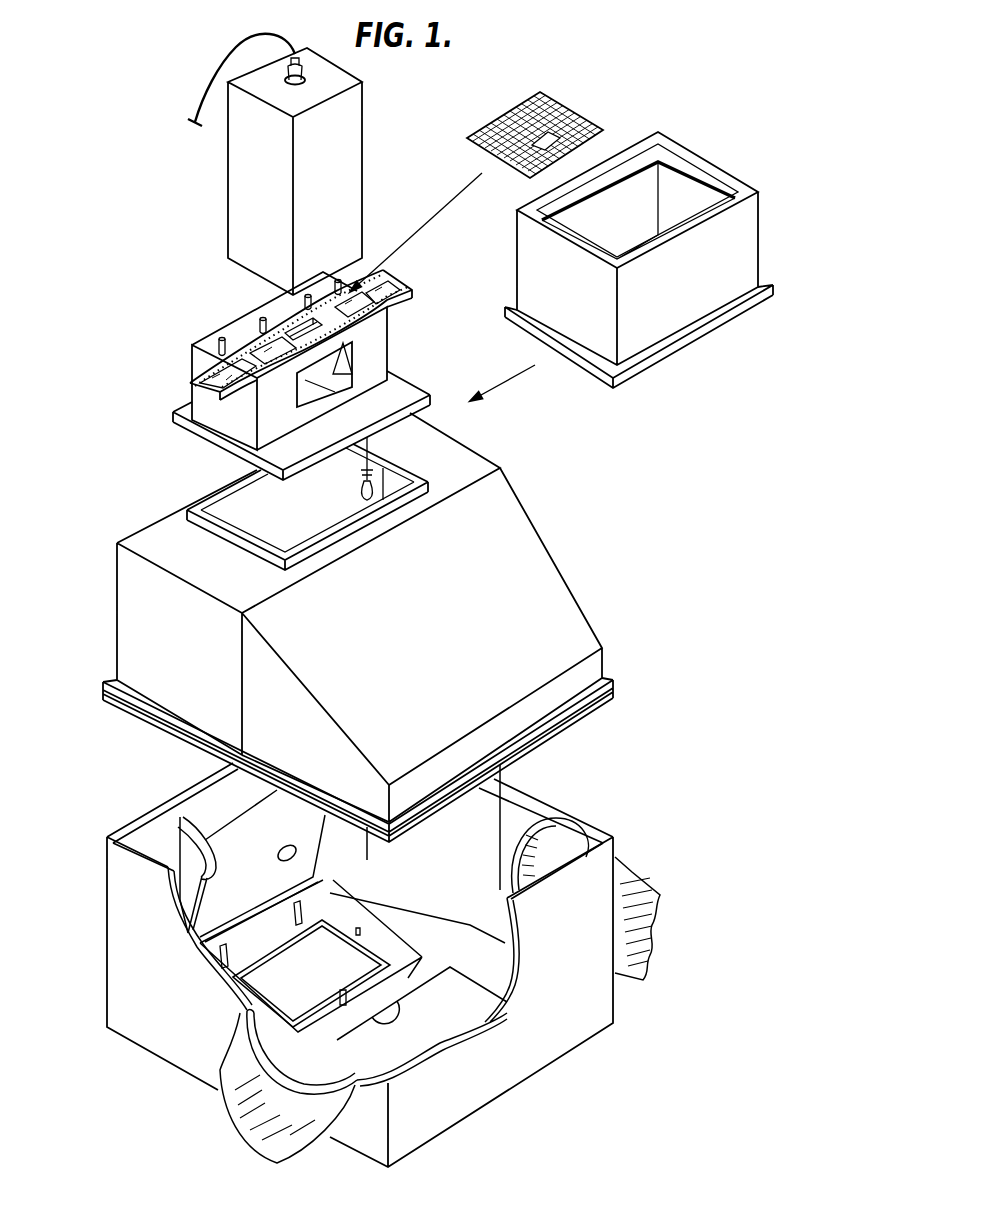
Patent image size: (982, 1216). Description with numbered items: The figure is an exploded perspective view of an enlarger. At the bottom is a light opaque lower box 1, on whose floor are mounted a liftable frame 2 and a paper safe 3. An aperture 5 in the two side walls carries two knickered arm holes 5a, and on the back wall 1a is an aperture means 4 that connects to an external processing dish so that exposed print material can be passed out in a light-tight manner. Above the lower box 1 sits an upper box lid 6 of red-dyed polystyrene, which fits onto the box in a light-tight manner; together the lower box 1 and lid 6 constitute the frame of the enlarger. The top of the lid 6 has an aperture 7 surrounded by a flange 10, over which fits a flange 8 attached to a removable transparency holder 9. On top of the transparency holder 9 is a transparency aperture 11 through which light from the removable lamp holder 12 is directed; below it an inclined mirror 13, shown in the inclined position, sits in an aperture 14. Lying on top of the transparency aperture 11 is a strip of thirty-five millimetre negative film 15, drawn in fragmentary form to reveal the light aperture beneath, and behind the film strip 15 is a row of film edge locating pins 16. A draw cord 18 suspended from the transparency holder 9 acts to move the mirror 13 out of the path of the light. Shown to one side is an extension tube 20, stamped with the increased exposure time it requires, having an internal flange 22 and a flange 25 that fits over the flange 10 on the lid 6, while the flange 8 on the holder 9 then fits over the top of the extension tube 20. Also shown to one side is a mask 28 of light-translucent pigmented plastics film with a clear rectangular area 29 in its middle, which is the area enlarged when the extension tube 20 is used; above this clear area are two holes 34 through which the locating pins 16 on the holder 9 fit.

The lower box 1 is at (592, 1018).
The back wall 1a is at (177, 793).
The liftable frame 2 is at (342, 920).
The paper safe 3 is at (447, 993).
The aperture means 4 is at (217, 895).
The aperture 5 is at (557, 842).
The knickered arm holes 5a is at (257, 1117).
The upper box lid 6 is at (553, 586).
The aperture 7 is at (291, 525).
The flange 8 is at (230, 449).
The transparency holder 9 is at (210, 410).
The flange 10 is at (443, 495).
The transparency aperture 11 is at (332, 331).
The lamp holder 12 is at (357, 103).
The inclined mirror 13 is at (332, 373).
The aperture 14 is at (353, 358).
The strip of 35 mm negative film 15 is at (222, 367).
The film edge locating pins 16 is at (225, 340).
The draw cord 18 is at (400, 462).
The extension tube 20 is at (660, 325).
The internal flange 22 is at (687, 172).
The flange 25 is at (728, 323).
The mask 28 is at (563, 106).
The clear rectangular area 29 is at (590, 127).
The holes 34 is at (525, 103).